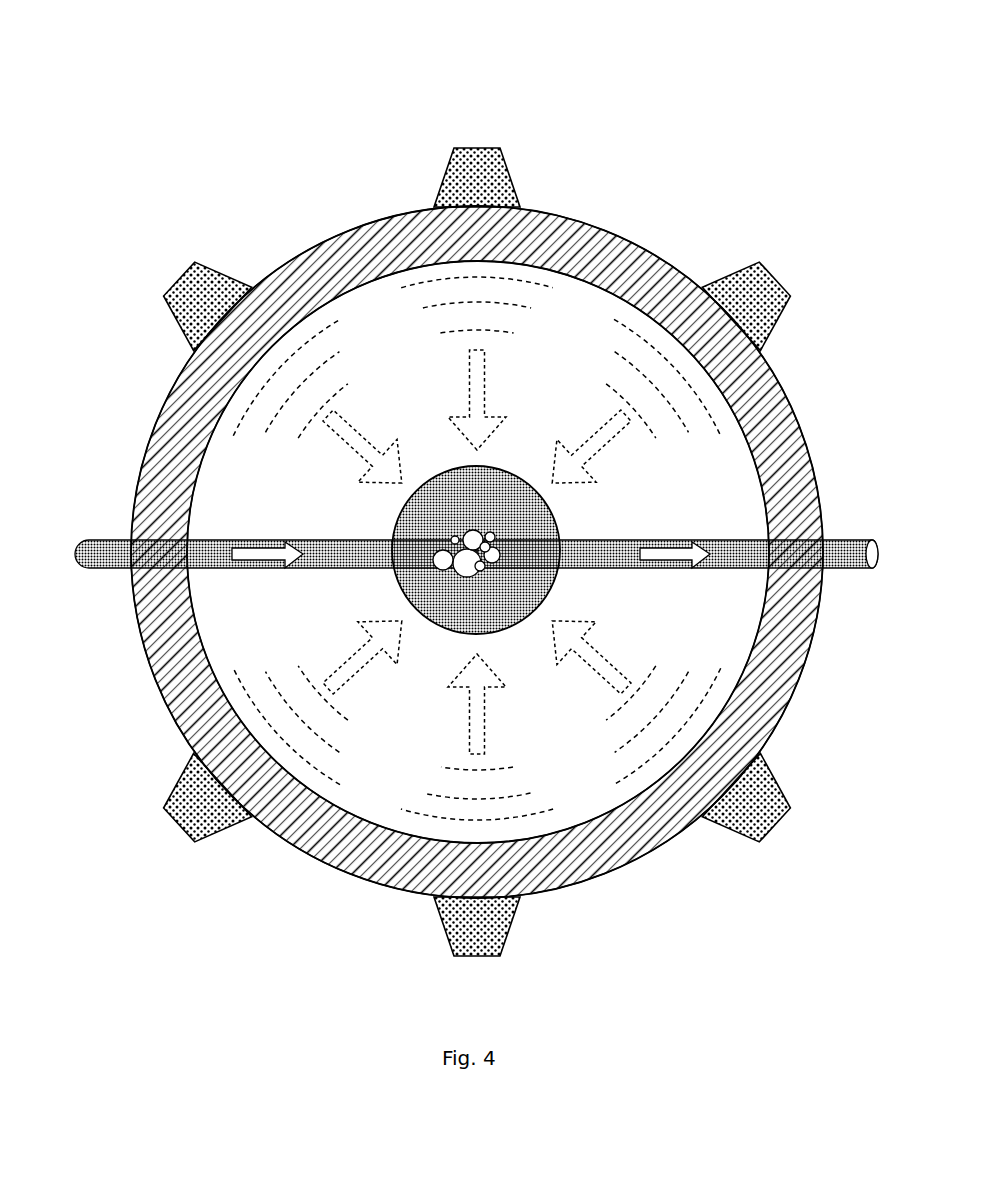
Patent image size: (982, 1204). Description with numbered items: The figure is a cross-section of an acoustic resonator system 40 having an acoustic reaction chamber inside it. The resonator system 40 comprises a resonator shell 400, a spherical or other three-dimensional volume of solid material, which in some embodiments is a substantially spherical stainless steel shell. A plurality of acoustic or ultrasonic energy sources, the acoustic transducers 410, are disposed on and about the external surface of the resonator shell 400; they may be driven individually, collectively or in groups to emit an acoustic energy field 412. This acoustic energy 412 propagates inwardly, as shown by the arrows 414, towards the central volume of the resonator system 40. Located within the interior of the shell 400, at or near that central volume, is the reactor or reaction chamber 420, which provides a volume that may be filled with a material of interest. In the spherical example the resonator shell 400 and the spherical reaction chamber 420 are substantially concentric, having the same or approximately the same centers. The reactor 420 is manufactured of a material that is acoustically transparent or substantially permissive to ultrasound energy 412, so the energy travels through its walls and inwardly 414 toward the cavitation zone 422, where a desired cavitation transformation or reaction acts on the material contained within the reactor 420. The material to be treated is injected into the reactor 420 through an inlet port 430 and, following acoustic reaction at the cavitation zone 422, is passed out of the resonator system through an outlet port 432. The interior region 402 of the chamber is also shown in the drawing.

The acoustic resonator system 40 is at (232, 88).
The resonator shell 400 is at (170, 428).
The chamber 402 is at (570, 323).
The acoustic transducers 410 is at (474, 147).
The acoustic energy field 412 is at (470, 302).
The arrows 414 is at (473, 383).
The reaction chamber 420 is at (550, 588).
The cavitation zone 422 is at (460, 563).
The inlet port 430 is at (93, 540).
The outlet port 432 is at (850, 538).